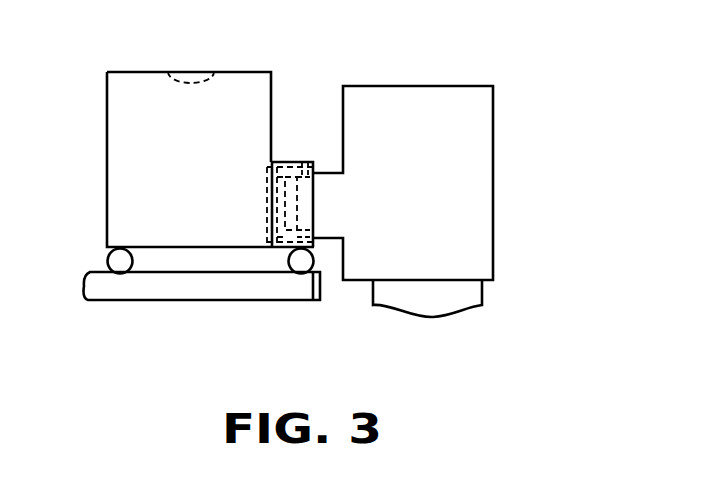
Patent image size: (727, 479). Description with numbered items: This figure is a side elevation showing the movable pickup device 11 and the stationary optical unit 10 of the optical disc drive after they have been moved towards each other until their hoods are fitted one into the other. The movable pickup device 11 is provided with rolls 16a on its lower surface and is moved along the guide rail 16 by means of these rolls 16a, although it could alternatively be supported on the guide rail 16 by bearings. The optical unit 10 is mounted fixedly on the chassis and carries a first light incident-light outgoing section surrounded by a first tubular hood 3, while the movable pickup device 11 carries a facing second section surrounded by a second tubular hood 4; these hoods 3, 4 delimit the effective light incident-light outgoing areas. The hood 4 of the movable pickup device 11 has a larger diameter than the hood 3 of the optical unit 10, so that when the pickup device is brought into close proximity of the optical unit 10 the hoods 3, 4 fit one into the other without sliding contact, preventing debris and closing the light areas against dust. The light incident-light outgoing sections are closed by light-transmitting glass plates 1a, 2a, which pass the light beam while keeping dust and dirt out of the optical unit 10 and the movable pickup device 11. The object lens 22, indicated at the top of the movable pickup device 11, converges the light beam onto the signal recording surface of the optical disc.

The glass plate 1a is at (288, 205).
The glass plate 2a is at (267, 215).
The first tubular hood 3 is at (300, 162).
The second tubular hood 4 is at (285, 162).
The optical unit 10 is at (475, 130).
The movable pickup device 11 is at (118, 137).
The guide rail 16 is at (172, 290).
The rolls 16a is at (119, 264).
The object lens 22 is at (198, 70).